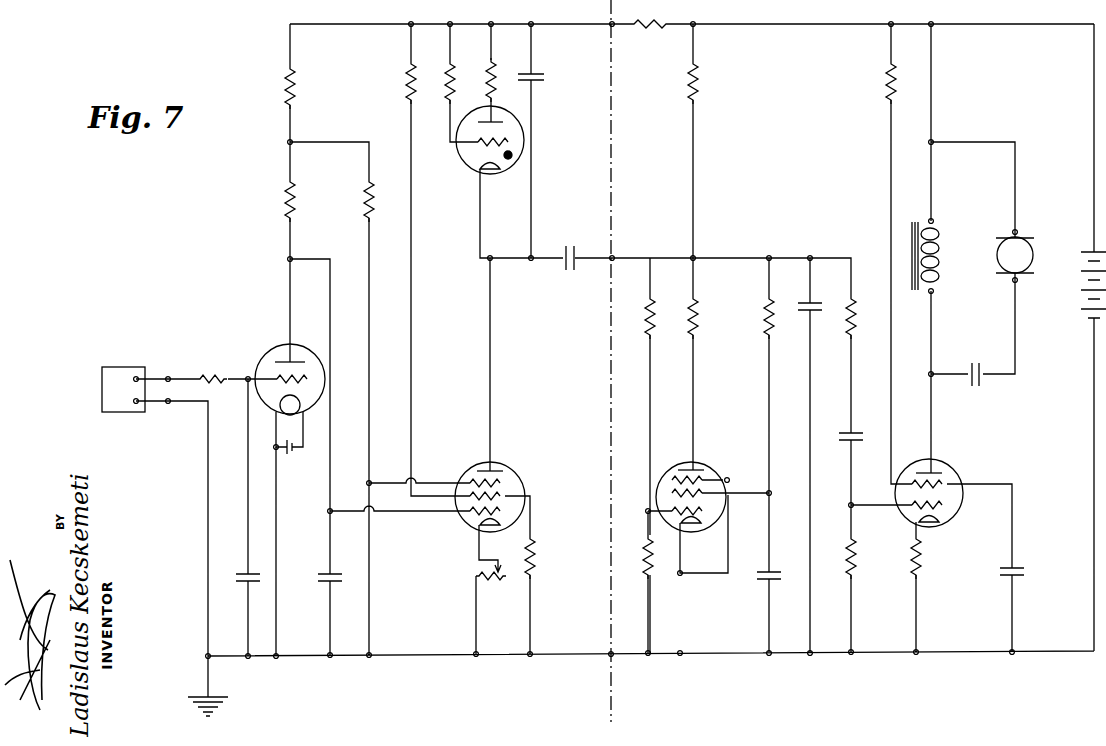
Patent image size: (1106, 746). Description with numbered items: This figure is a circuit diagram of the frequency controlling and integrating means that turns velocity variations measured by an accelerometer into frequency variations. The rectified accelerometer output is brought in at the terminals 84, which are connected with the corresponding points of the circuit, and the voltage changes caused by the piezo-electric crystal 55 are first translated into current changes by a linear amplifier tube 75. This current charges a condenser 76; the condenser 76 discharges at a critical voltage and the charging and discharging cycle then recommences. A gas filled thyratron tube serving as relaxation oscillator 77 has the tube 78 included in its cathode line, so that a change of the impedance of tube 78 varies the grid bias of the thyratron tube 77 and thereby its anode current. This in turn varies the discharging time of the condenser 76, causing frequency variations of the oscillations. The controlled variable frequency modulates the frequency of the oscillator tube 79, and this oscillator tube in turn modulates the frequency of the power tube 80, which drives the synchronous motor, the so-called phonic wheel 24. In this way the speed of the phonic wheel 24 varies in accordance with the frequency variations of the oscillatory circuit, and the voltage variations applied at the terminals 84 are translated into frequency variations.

The phonic wheel 24 is at (1022, 250).
The piezo-electric crystal 55 is at (108, 400).
The linear amplifier tube 75 is at (268, 358).
The condenser 76 is at (537, 80).
The gas filled thyratron tube 77 is at (472, 161).
The tube 78 is at (511, 481).
The oscillator tube 79 is at (707, 470).
The power tube 80 is at (945, 480).
The terminals 84 is at (166, 414).